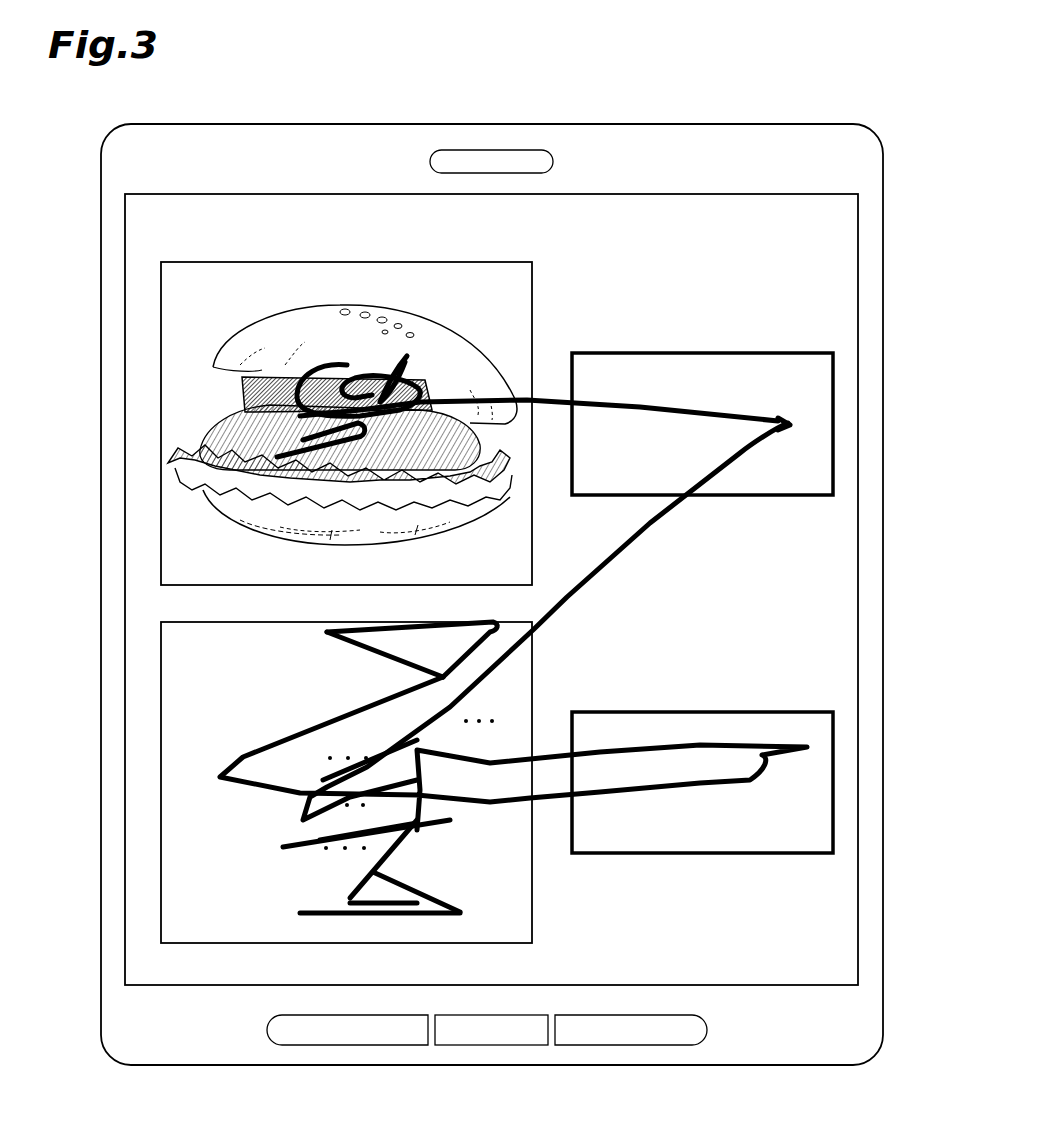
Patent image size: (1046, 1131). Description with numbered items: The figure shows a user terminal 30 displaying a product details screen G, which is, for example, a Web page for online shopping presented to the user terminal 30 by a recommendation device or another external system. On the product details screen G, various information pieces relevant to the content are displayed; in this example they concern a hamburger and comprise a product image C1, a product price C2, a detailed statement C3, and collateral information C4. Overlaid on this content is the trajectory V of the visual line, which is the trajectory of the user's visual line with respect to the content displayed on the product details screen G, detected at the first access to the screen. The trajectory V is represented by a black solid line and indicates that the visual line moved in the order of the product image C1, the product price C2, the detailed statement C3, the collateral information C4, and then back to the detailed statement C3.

The user terminal 30 is at (815, 124).
The product details screen G is at (580, 211).
The product image C1 is at (160, 427).
The product price C2 is at (835, 412).
The detailed statement C3 is at (160, 782).
The collateral information C4 is at (835, 775).
The trajectory of the visual line V is at (650, 530).